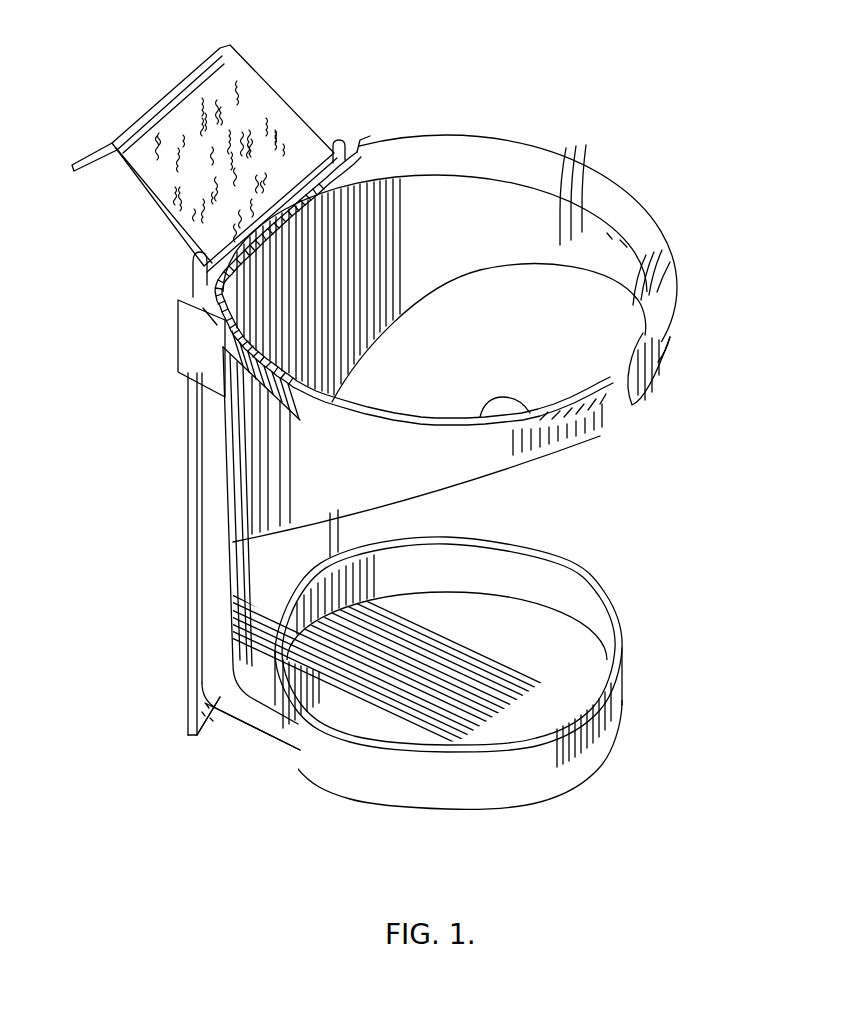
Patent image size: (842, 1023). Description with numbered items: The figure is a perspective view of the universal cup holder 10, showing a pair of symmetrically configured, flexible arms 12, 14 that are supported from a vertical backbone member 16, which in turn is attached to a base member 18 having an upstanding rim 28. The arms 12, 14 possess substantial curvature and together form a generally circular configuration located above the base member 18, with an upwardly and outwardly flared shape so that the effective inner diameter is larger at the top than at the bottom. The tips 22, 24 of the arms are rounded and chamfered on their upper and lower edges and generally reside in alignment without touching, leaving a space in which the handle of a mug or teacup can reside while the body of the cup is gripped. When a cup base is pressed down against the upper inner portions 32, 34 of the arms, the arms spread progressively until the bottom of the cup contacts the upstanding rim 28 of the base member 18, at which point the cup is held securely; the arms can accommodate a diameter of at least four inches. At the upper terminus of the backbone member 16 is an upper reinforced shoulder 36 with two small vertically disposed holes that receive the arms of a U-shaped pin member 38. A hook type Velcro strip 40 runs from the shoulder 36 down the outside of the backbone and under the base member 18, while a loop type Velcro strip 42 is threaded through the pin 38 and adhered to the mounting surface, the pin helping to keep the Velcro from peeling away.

The universal cup holder 10 is at (183, 870).
The arm 12 is at (430, 467).
The arm 14 is at (665, 237).
The vertical backbone member 16 is at (217, 572).
The base member 18 is at (370, 783).
The tip 22 is at (598, 437).
The tip 24 is at (640, 407).
The upstanding rim 28 is at (602, 612).
The upper inner portion 32 is at (515, 398).
The upper inner portion 34 is at (630, 217).
The upper reinforced shoulder 36 is at (197, 348).
The U-shaped pin member 38 is at (347, 128).
The hook type Velcro strip 40 is at (245, 723).
The loop type Velcro strip 42 is at (258, 98).